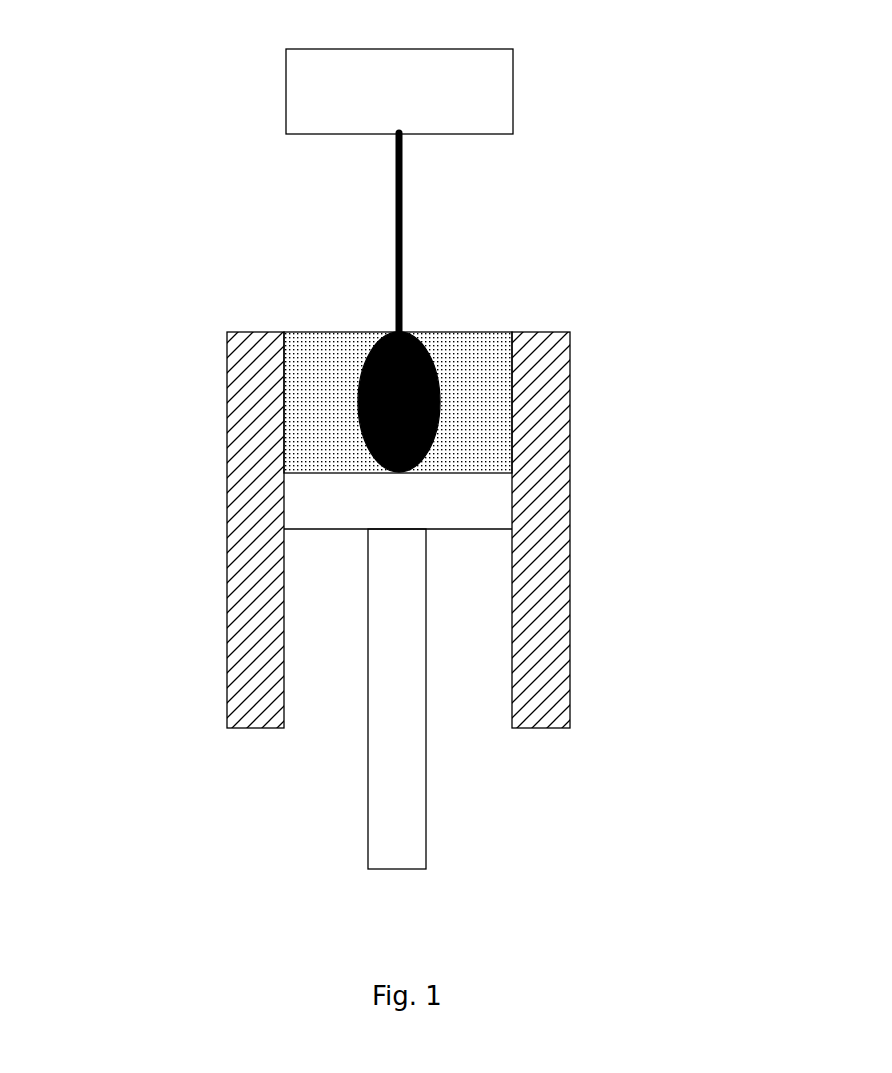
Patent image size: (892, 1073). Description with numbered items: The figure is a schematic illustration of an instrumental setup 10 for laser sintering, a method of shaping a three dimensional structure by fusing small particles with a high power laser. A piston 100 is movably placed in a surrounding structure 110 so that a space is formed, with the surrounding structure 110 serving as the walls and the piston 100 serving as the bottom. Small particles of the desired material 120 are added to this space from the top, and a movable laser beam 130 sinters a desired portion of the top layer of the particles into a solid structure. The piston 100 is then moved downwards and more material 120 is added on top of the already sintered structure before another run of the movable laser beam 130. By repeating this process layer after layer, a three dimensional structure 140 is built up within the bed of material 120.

The sample preparation apparatus 10 is at (366, 459).
The piston 100 is at (396, 806).
The surrounding structure 110 is at (250, 522).
The material 120 is at (458, 353).
The movable laser beam 130 is at (402, 170).
The three dimensional structure 140 is at (353, 333).